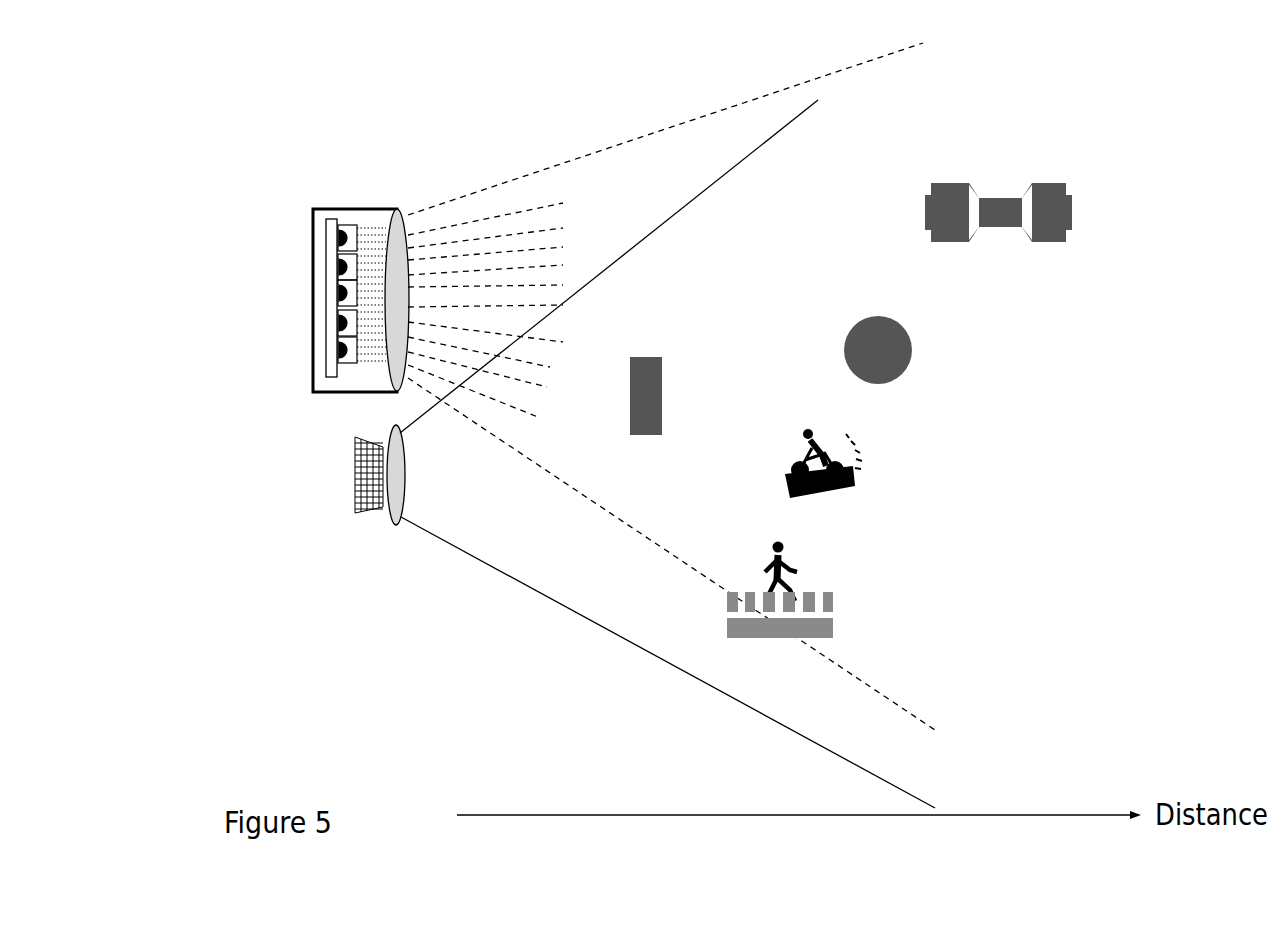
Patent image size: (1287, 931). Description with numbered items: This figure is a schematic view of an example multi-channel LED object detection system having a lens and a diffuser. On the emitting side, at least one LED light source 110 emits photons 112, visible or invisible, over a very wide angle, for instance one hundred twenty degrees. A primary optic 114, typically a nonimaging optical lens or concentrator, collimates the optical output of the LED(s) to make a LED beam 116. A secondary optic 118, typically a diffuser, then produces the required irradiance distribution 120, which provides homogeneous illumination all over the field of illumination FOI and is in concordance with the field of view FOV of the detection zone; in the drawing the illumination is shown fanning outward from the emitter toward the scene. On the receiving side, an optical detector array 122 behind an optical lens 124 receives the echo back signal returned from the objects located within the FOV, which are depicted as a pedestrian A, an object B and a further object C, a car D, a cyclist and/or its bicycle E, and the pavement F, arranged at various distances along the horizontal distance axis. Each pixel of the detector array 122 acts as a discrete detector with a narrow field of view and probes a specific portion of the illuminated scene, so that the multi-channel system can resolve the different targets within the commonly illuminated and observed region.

The LED light source 110 is at (337, 226).
The photons 112 is at (340, 262).
The primary optic 114 is at (347, 228).
The LED beam 116 is at (386, 228).
The secondary optic 118 is at (495, 187).
The irradiance distribution 120 is at (406, 214).
The optical detector array 122 is at (355, 470).
The optical lens 124 is at (390, 520).
The field of illumination FOI is at (862, 63).
The field of view FOV is at (455, 544).
The pedestrian A is at (797, 572).
The object B is at (662, 400).
The object C is at (912, 360).
The car D is at (1072, 213).
The cyclist and/or its bicycle E is at (853, 475).
The pavement F is at (833, 597).